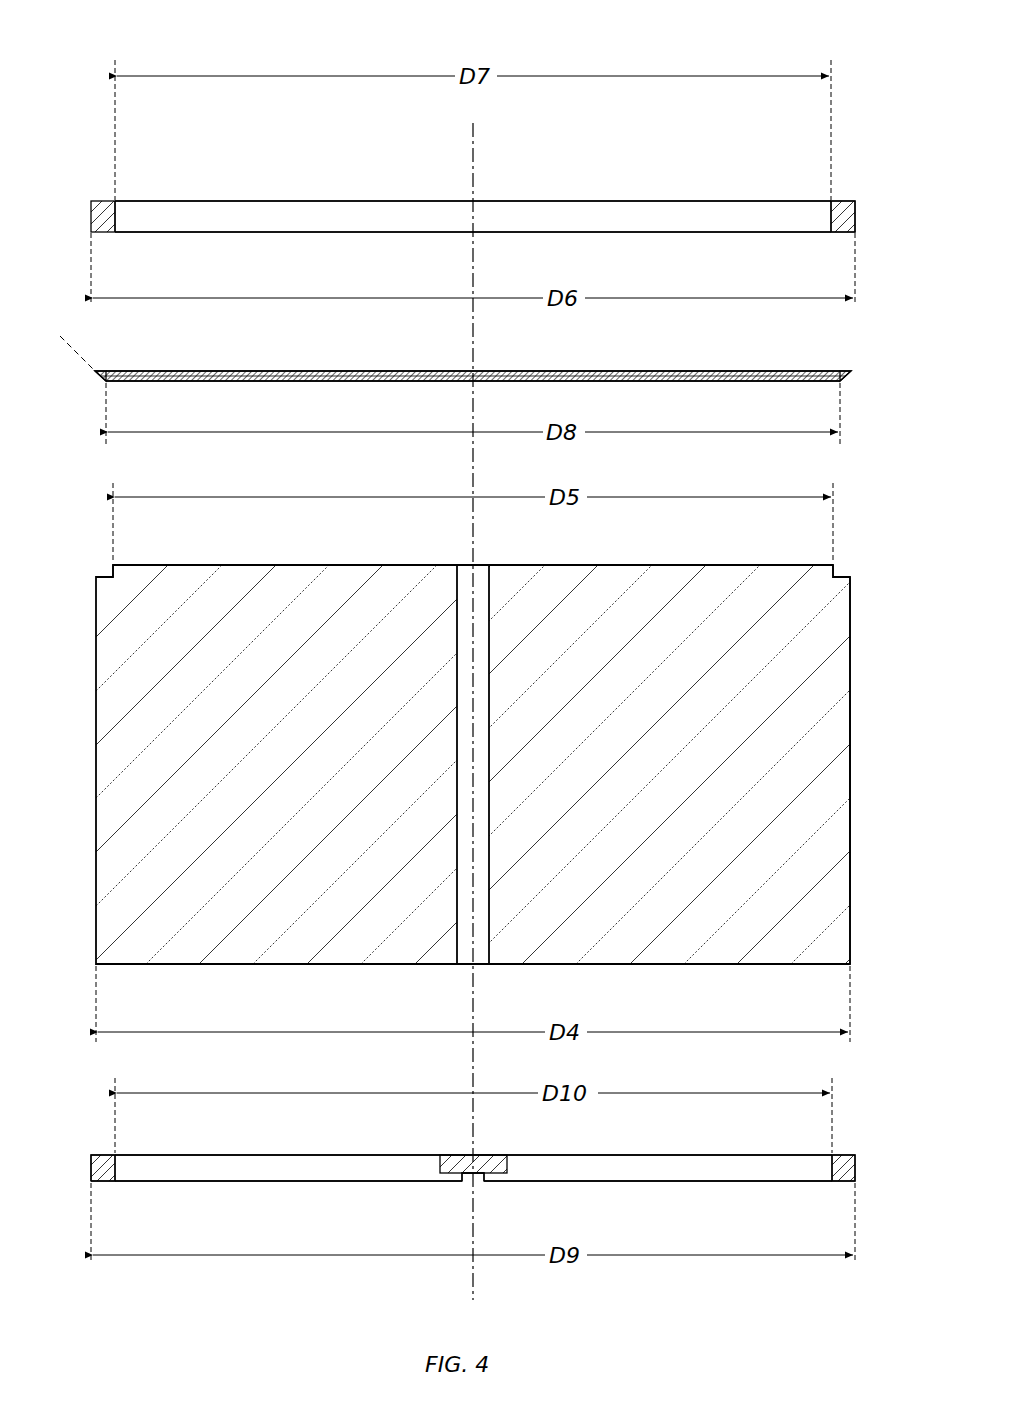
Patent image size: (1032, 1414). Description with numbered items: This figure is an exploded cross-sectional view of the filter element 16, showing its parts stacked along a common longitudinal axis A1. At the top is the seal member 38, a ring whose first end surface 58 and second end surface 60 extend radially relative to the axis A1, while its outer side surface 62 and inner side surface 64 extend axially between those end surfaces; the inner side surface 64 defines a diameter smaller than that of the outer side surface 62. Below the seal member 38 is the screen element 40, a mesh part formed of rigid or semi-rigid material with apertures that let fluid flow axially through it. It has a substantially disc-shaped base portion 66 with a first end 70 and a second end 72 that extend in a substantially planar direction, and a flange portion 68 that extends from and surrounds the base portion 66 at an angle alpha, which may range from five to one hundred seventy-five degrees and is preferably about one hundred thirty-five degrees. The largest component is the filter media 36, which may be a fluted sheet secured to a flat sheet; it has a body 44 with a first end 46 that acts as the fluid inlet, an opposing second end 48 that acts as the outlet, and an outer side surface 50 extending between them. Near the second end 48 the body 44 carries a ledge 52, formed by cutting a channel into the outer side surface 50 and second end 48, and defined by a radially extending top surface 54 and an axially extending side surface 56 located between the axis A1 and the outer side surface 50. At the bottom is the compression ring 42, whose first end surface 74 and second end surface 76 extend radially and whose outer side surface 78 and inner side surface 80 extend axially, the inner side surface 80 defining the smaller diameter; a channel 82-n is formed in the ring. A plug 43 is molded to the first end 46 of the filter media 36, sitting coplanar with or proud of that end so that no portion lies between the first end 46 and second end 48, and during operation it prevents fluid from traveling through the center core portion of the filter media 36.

The filter element 16 is at (68, 60).
The longitudinal axis A1 is at (475, 157).
The seal member 38 is at (78, 210).
The inner side surface 64 is at (116, 218).
The second end surface 60 is at (655, 200).
The outer side surface 62 is at (857, 218).
The first end surface 58 is at (678, 234).
The screen element 40 is at (92, 378).
The angle alpha is at (160, 374).
The second end 72 is at (338, 371).
The flange portion 68 is at (858, 378).
The first end 70 is at (287, 385).
The base portion 66 is at (707, 386).
The filter media 36 is at (77, 712).
The side surface 56 is at (110, 564).
The top surface 54 is at (97, 575).
The second end 48 is at (720, 564).
The ledge 52 is at (850, 566).
The body 44 is at (867, 712).
The outer side surface 50 is at (852, 786).
The first end 46 is at (678, 966).
The compression ring 42 is at (80, 1165).
The plug 43 is at (452, 1160).
The channel 82-n is at (464, 1184).
The second end surface 76 is at (660, 1154).
The outer side surface 78 is at (857, 1170).
The inner side surface 80 is at (117, 1172).
The first end surface 74 is at (680, 1183).